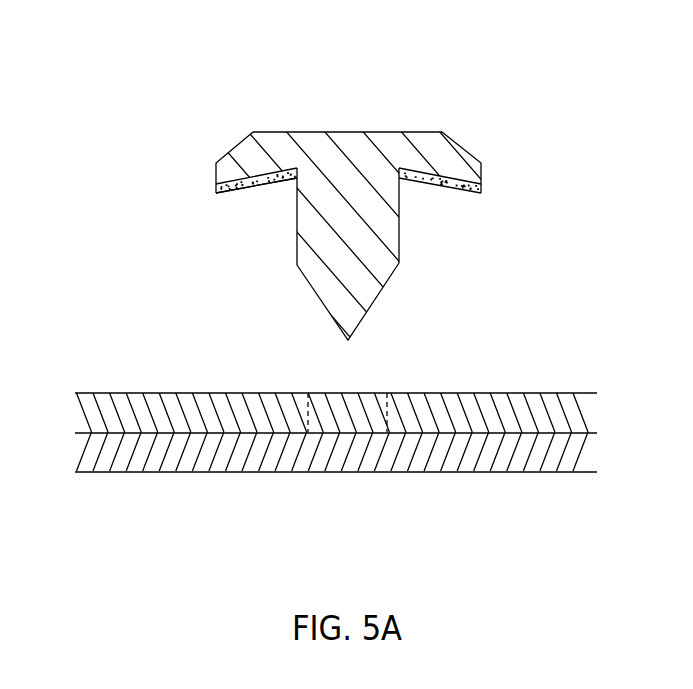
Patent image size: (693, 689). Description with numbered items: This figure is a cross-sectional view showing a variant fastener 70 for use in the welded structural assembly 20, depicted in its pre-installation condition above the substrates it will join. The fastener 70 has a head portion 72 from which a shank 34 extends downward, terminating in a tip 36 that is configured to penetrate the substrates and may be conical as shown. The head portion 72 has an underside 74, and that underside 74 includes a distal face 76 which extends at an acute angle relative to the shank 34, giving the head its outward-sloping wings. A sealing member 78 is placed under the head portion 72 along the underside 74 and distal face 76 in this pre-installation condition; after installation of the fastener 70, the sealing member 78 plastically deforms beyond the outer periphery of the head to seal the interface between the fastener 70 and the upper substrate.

The welded structural assembly 20 is at (386, 211).
The shank 34 is at (357, 240).
The tip 36 is at (342, 295).
The fastener 70 is at (328, 162).
The head portion 72 is at (234, 139).
The underside 74 is at (242, 195).
The distal face 76 is at (438, 182).
The sealing member 78 is at (214, 187).